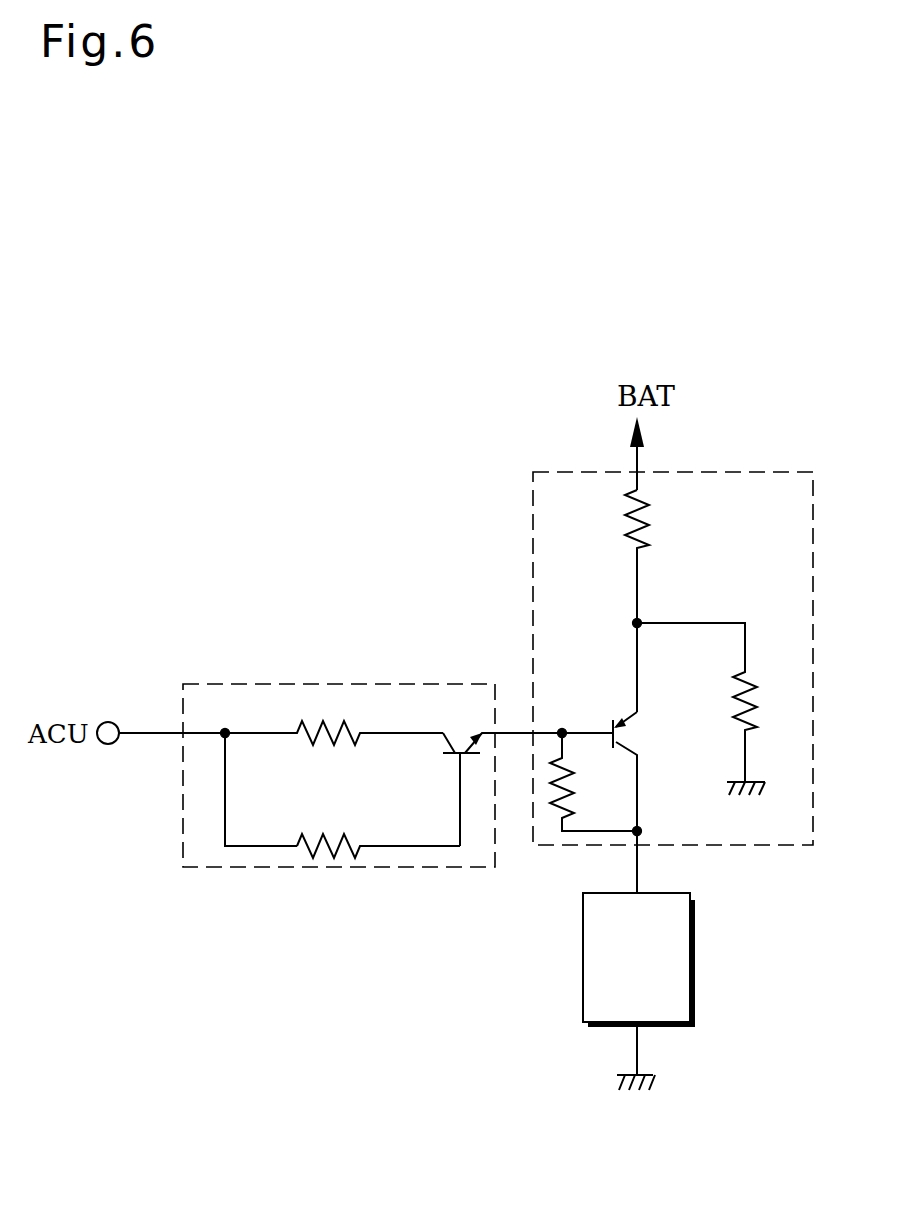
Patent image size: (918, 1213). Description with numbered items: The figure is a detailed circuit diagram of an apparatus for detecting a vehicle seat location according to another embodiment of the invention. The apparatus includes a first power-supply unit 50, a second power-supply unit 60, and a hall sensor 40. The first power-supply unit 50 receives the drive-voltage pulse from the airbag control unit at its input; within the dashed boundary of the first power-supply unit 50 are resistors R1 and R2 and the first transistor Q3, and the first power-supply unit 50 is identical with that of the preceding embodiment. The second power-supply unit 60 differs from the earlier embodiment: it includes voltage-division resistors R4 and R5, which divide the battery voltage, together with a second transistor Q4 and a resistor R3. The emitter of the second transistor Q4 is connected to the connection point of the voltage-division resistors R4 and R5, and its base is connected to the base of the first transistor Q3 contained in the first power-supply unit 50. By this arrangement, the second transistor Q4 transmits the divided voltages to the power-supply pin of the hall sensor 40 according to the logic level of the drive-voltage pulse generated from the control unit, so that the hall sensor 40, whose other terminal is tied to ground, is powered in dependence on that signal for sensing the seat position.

The hall sensor 40 is at (695, 965).
The first power-supply unit 50 is at (372, 802).
The second power-supply unit 60 is at (709, 682).
The resistor R1 is at (334, 718).
The resistor R2 is at (378, 828).
The resistor R3 is at (593, 782).
The voltage-division resistor R4 is at (659, 601).
The voltage-division resistor R5 is at (719, 709).
The first transistor Q3 is at (502, 774).
The second transistor Q4 is at (621, 802).